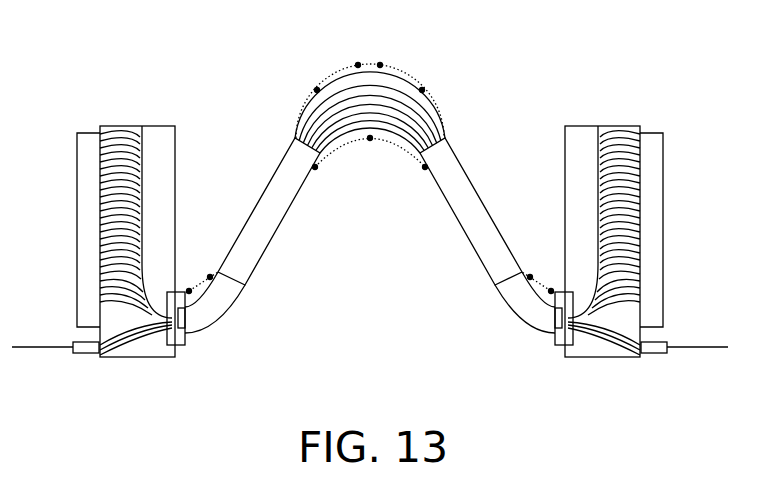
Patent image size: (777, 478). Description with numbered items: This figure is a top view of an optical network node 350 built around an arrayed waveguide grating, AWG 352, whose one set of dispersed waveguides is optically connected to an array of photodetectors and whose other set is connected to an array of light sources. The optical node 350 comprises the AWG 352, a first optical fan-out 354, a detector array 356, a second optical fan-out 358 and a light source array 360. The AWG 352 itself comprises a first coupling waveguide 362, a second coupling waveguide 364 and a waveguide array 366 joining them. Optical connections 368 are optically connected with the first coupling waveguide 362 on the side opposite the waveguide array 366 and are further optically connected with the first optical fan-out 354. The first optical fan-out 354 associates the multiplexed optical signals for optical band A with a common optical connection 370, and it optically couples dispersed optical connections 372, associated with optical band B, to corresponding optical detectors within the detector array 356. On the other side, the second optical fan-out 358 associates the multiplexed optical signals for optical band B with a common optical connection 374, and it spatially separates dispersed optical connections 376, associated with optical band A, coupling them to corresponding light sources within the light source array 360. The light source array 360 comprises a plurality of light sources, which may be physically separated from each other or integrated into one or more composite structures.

The optical node 350 is at (381, 208).
The AWG 352 is at (370, 190).
The first optical fan-out 354 is at (588, 126).
The detector array 356 is at (665, 197).
The second optical fan-out 358 is at (160, 125).
The light source array 360 is at (75, 158).
The first coupling waveguide 362 is at (462, 228).
The second coupling waveguide 364 is at (295, 200).
The waveguide array 366 is at (345, 92).
The optical connections 368 is at (505, 303).
The common optical connection 370 is at (693, 348).
The dispersed optical connections 372 is at (617, 120).
The common optical connection 374 is at (47, 349).
The dispersed optical connections 376 is at (134, 118).